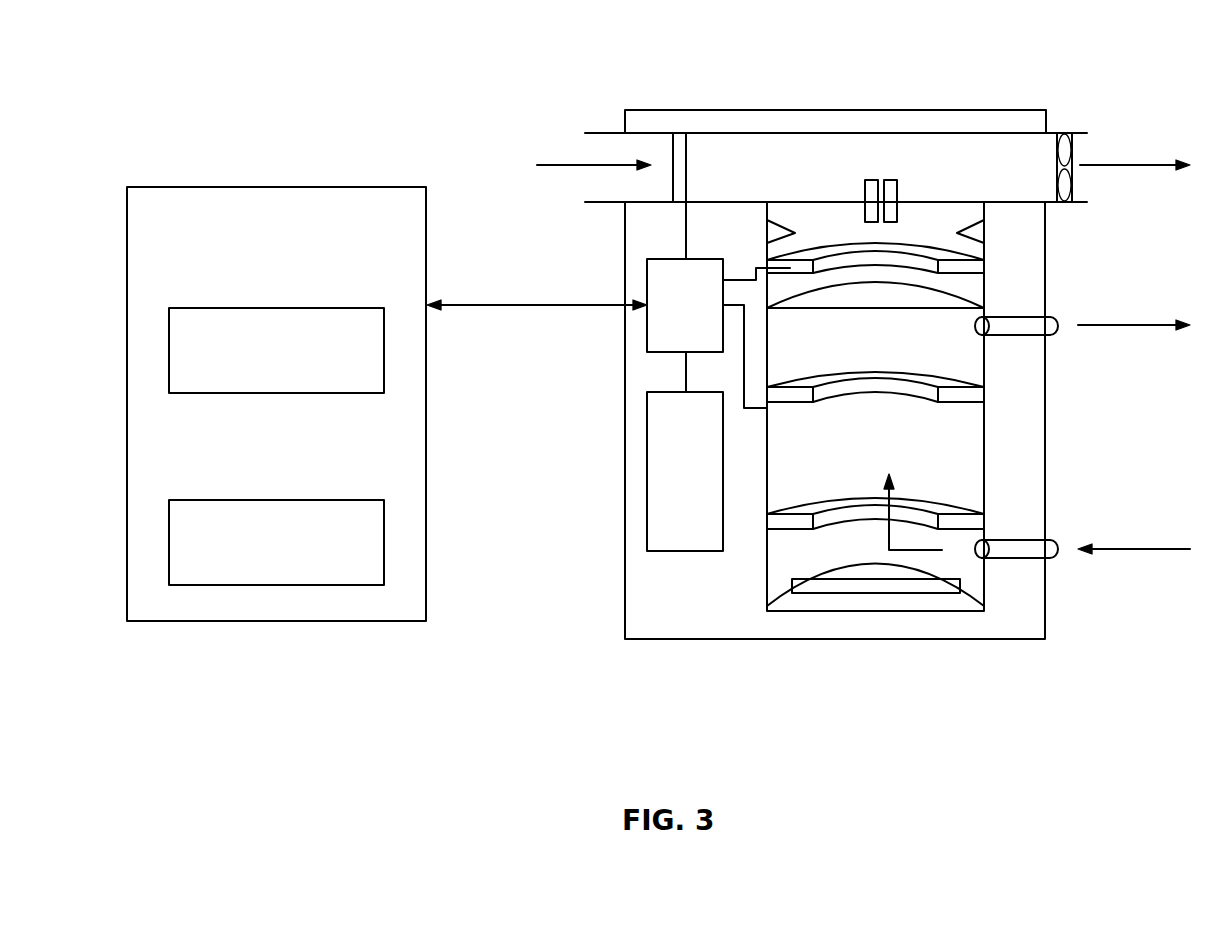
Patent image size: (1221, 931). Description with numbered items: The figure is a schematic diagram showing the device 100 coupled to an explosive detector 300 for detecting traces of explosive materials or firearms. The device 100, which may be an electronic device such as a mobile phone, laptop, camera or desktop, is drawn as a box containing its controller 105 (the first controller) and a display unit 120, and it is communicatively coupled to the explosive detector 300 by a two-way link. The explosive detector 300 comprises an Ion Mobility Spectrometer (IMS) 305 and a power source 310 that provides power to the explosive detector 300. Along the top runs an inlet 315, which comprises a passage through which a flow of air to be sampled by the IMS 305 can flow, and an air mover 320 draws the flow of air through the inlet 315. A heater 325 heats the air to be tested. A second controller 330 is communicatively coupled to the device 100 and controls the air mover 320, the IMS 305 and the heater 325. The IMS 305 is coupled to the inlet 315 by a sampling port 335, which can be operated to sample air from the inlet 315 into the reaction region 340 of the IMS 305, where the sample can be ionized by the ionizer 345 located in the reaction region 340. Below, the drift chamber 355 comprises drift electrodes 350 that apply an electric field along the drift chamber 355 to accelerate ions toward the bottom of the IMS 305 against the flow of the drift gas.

The device 100 is at (198, 187).
The controller 105 is at (240, 308).
The display unit 120 is at (240, 500).
The explosive detector 300 is at (625, 418).
The Ion Mobility Spectrometer 305 is at (767, 587).
The power source 310 is at (680, 531).
The inlet 315 is at (843, 155).
The air mover 320 is at (1072, 150).
The heater 325 is at (689, 167).
The second controller 330 is at (665, 292).
The sampling port 335 is at (890, 178).
The reaction region 340 is at (786, 232).
The ionizer 345 is at (975, 232).
The drift electrodes 350 is at (973, 267).
The drift chamber 355 is at (953, 463).